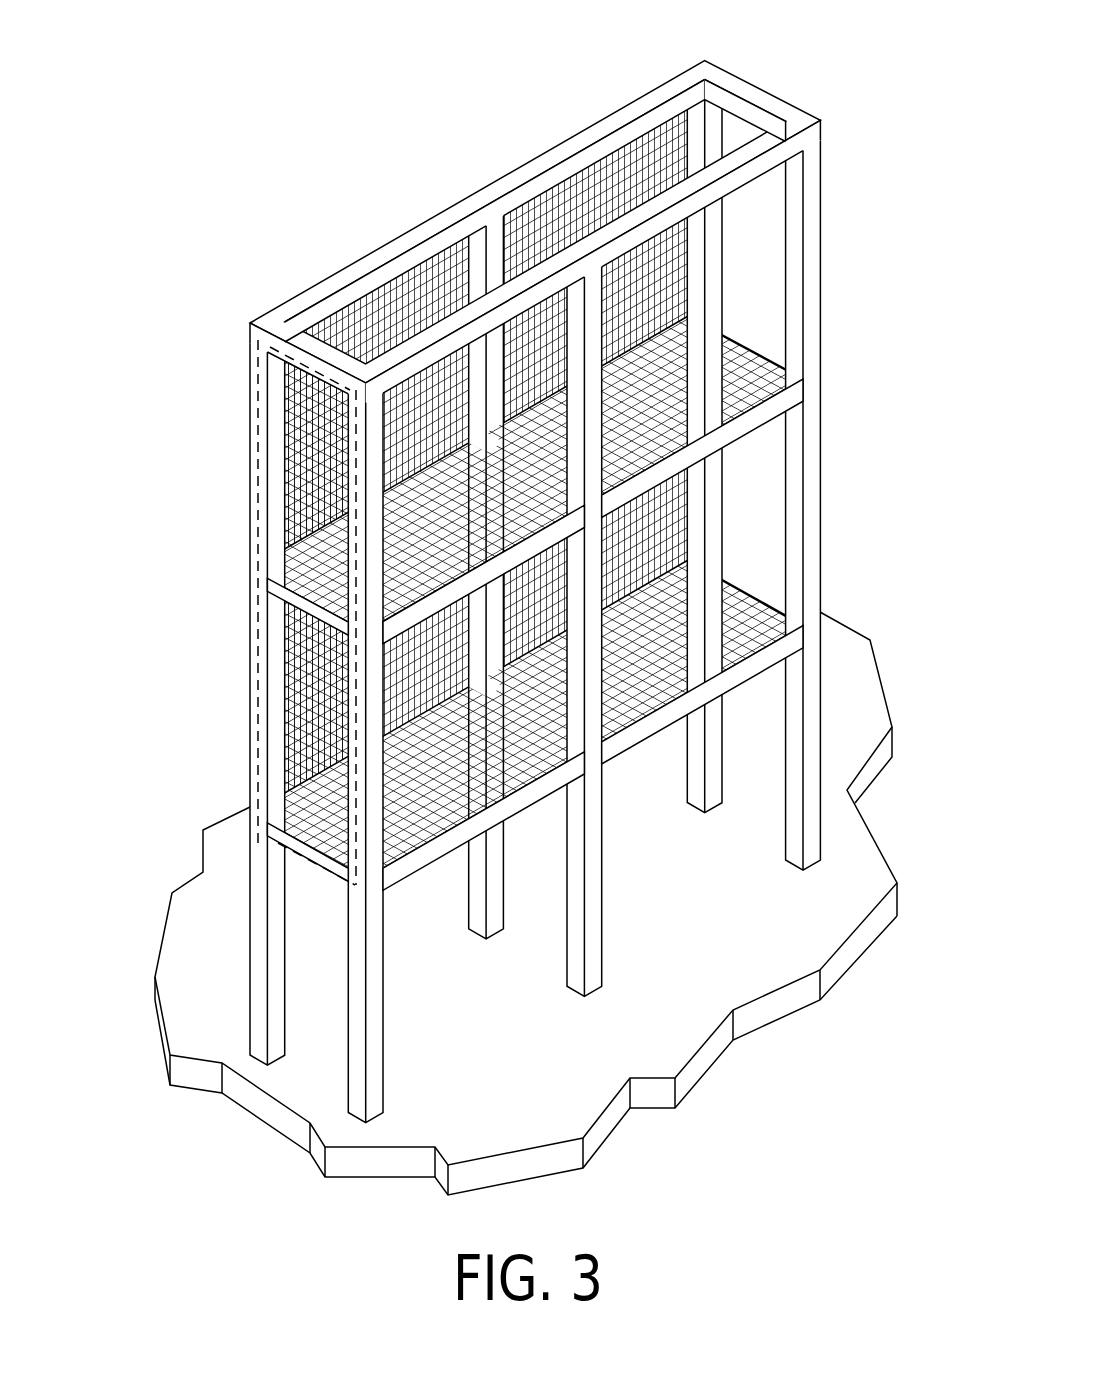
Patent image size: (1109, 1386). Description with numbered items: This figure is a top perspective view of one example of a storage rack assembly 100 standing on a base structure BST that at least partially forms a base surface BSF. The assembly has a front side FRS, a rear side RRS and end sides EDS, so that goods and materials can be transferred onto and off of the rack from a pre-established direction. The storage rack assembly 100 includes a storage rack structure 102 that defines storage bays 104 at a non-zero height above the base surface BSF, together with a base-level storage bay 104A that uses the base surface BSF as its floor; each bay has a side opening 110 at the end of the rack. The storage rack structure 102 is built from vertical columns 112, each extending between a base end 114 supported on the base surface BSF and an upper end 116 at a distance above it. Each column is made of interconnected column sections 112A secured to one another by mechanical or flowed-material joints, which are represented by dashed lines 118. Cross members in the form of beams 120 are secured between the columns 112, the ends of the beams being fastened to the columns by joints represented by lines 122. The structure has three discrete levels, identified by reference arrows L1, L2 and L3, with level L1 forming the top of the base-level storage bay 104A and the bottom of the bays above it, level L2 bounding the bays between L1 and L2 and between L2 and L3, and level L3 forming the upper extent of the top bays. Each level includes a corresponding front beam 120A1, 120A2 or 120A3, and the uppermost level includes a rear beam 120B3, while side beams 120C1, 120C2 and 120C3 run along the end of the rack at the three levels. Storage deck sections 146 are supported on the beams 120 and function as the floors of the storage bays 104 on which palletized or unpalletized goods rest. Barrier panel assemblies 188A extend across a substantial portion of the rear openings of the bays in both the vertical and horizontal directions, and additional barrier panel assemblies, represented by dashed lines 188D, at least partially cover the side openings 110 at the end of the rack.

The storage rack assembly 100 is at (525, 618).
The storage rack structure 102 is at (525, 618).
The storage bay 104 is at (523, 561).
The base-level storage bay 104A is at (569, 888).
The side opening 110 is at (757, 228).
The column 112 is at (551, 606).
The column section 112A is at (470, 284).
The base end 114 is at (526, 903).
The upper end 116 is at (205, 350).
The joint between column sections 118 is at (812, 500).
The beam 120 is at (525, 618).
The front beam of first level 120A1 is at (748, 677).
The front beam of second level 120A2 is at (780, 410).
The front beam of third level 120A3 is at (760, 178).
The rear beam of third level 120B3 is at (340, 270).
The side beam of first level 120C1 is at (300, 870).
The side beam of second level 120C2 is at (285, 618).
The side beam of third level 120C3 is at (517, 242).
The beam-to-column joint 122 is at (487, 223).
The storage deck section 146 is at (508, 561).
The barrier panel assembly 188A is at (310, 455).
The barrier panel assembly over side opening 188D is at (290, 370).
The first level L1 is at (447, 715).
The second level L2 is at (215, 558).
The third level L3 is at (532, 618).
The base structure BST is at (786, 1001).
The base surface BSF is at (180, 980).
The front side FRS is at (593, 901).
The rear side RRS is at (443, 197).
The end side EDS is at (517, 618).